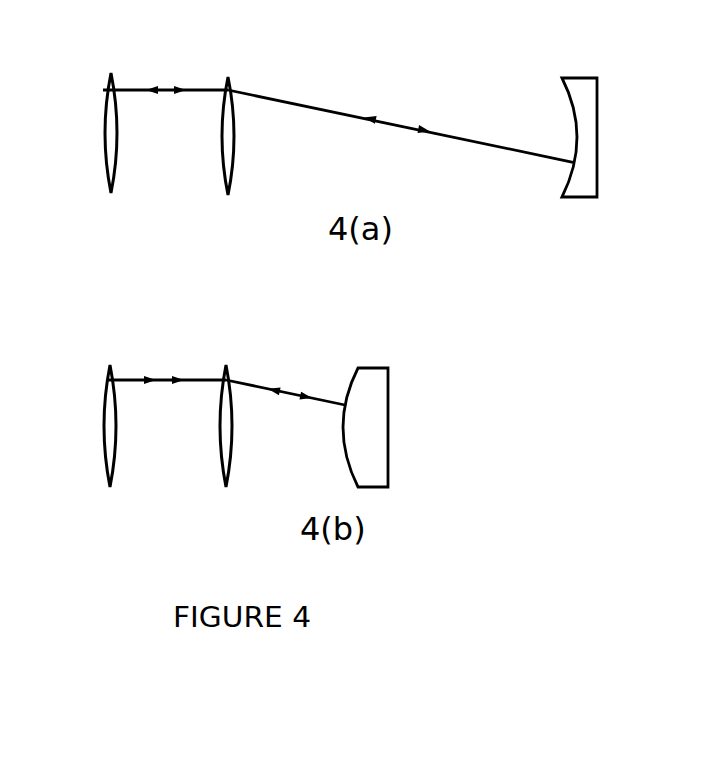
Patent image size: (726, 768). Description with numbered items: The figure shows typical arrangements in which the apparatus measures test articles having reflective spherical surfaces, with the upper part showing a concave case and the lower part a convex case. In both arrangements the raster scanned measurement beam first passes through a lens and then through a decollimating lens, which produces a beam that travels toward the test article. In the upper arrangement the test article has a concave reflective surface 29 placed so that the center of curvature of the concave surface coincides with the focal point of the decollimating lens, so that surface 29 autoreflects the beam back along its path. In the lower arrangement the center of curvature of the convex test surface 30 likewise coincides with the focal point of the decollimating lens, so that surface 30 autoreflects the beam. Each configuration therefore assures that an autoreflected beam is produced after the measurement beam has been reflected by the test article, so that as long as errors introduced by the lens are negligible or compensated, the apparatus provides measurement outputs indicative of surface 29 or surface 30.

The concave reflective surface 29 is at (572, 103).
The convex test surface 30 is at (350, 382).